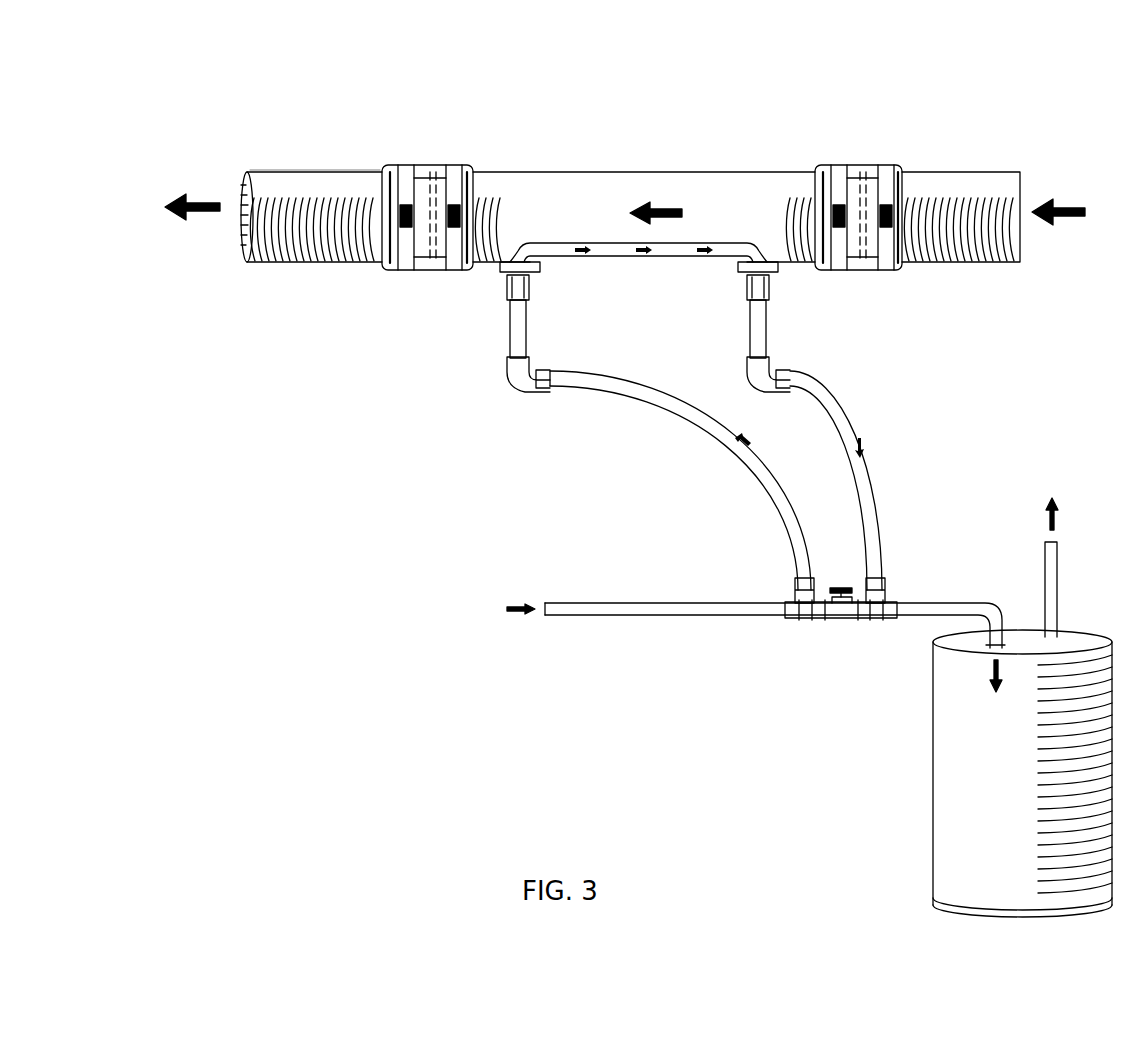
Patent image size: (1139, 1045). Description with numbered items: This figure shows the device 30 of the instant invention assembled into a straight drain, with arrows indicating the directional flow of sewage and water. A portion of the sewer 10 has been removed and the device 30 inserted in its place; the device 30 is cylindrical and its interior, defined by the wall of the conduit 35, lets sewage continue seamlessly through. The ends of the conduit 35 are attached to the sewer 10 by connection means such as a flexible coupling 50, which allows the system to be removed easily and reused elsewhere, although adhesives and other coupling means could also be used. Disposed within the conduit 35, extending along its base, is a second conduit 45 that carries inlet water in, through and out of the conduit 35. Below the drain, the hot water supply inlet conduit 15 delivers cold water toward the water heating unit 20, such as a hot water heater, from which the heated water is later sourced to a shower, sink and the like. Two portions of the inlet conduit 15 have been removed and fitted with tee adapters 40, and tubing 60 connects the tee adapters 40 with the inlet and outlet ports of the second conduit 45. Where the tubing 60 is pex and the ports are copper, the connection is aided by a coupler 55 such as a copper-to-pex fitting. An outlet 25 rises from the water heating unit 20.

The sewer 10 is at (309, 266).
The conduit 15 is at (722, 617).
The water heating unit 20 is at (978, 765).
The outlet conduit 25 is at (1060, 562).
The device 30 is at (265, 145).
The conduit 35 is at (600, 170).
The tee adapters 40 is at (840, 622).
The second conduit 45 is at (553, 243).
The flexible coupling 50 is at (900, 166).
The coupler 55 is at (505, 363).
The tubing 60 is at (858, 410).